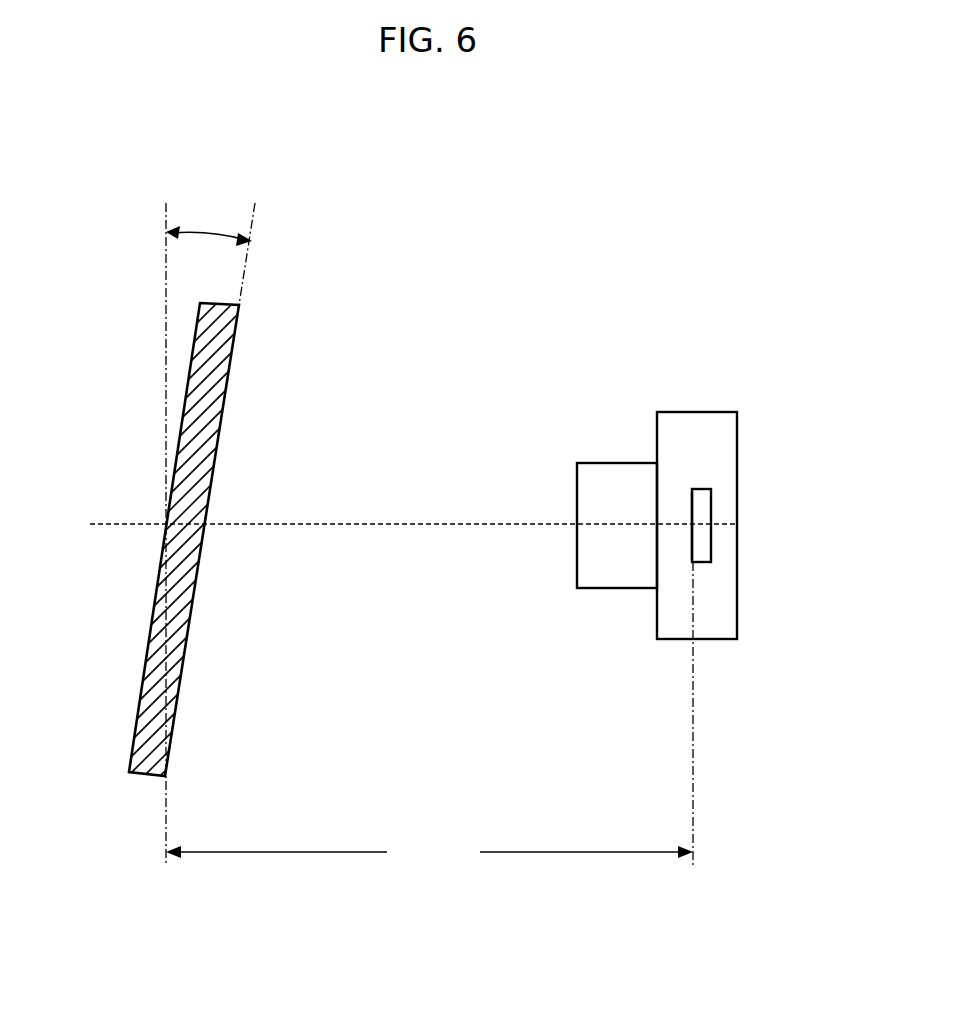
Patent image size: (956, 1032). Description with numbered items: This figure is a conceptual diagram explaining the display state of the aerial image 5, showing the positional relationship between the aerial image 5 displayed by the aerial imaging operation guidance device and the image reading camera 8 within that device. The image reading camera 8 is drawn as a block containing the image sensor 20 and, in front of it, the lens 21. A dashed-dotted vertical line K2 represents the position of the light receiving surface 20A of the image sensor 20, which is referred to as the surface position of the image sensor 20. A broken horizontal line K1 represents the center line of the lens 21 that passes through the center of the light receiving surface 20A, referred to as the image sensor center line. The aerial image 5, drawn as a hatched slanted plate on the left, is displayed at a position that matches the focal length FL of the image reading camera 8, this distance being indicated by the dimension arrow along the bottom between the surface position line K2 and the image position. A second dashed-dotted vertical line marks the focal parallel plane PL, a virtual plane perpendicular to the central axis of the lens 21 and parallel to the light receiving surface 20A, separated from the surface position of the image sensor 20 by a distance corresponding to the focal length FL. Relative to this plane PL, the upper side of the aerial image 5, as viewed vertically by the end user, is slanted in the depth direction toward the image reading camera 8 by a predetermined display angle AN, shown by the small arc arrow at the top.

The aerial image 5 is at (138, 710).
The image reading camera 8 is at (698, 412).
The image sensor 20 is at (712, 522).
The light receiving surface 20A is at (682, 482).
The lens 21 is at (603, 589).
The focal parallel plane PL is at (165, 328).
The display angle AN is at (203, 231).
The image sensor center line K1 is at (322, 526).
The surface position K2 is at (695, 729).
The focal length FL is at (429, 854).